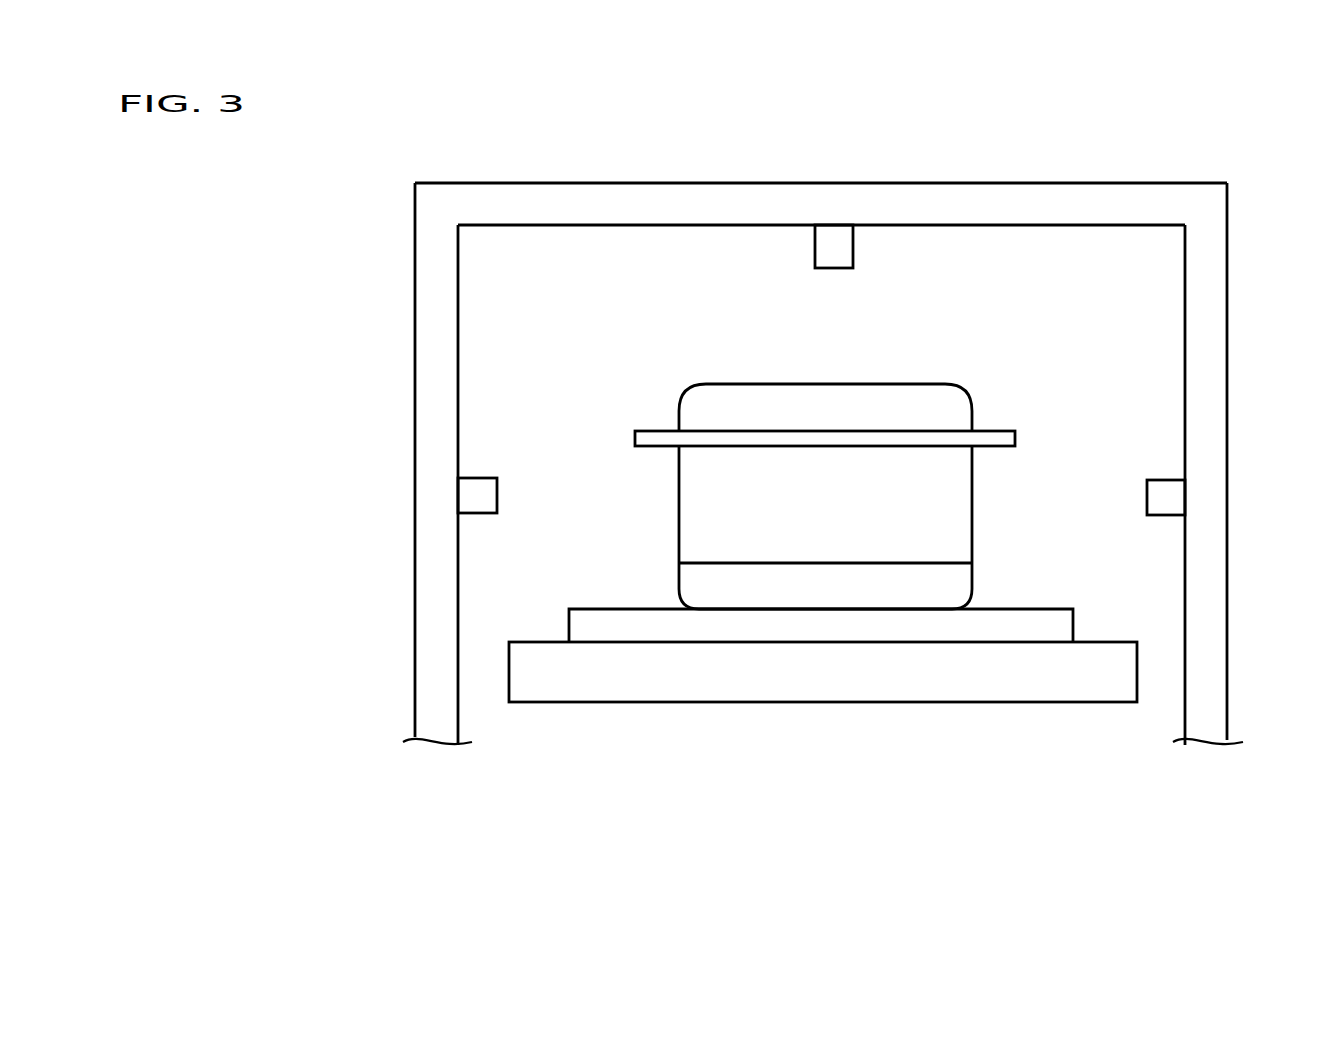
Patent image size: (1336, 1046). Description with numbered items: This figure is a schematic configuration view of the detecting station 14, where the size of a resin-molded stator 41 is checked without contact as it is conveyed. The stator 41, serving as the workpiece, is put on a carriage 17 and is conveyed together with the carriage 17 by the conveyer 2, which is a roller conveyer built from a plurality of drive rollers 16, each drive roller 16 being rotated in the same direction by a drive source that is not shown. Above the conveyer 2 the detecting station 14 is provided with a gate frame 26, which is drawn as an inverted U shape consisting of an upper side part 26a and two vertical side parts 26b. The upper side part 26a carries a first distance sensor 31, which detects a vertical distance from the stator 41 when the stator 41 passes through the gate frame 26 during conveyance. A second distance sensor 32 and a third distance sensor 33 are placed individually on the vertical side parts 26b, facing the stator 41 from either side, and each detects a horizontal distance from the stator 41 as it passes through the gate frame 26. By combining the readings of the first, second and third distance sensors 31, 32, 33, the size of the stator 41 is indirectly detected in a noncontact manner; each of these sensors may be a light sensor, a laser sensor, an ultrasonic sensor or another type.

The detecting station 14 is at (745, 787).
The gate frame 26 is at (1222, 688).
The upper side part 26a is at (1003, 197).
The vertical side parts 26b is at (418, 373).
The first distance sensor 31 is at (853, 247).
The second distance sensor 32 is at (483, 507).
The third distance sensor 33 is at (1155, 508).
The conveyer 2 is at (1005, 705).
The drive roller 16 is at (1075, 695).
The carriage 17 is at (1048, 623).
The stator 41 is at (872, 395).